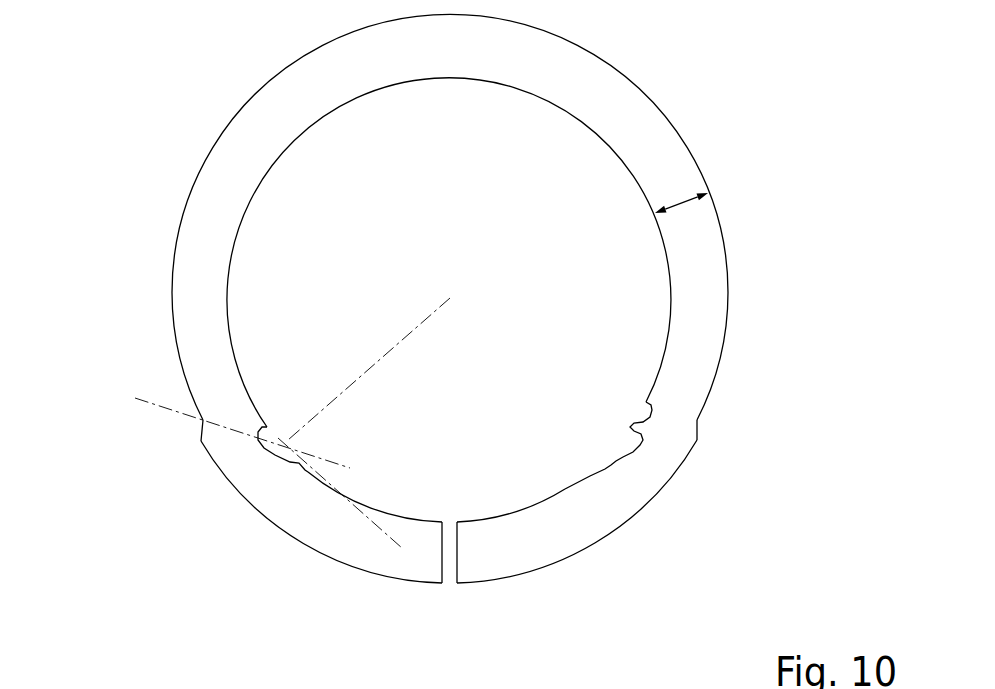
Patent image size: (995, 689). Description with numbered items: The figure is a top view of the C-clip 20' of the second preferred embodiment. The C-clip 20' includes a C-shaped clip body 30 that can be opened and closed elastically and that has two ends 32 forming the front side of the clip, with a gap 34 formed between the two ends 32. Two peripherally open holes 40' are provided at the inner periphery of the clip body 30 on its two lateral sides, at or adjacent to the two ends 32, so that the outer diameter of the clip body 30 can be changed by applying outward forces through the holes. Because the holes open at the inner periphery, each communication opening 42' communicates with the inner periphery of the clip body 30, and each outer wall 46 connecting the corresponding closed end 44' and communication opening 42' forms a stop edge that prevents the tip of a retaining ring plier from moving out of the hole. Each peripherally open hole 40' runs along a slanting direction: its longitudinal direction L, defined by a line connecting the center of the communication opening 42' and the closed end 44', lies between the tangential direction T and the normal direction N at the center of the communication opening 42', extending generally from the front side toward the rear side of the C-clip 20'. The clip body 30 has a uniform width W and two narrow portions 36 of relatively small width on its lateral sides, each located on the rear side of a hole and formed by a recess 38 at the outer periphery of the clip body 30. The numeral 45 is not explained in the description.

The C-clip 20' is at (465, 351).
The clip body 30 is at (167, 216).
The ends 32 is at (457, 552).
The gap 34 is at (448, 583).
The narrow portions 36 is at (678, 410).
The recess 38 is at (698, 427).
The peripherally open holes 40' is at (455, 385).
The communication opening 42' is at (454, 448).
The closed end 44' is at (424, 429).
The protrusion 45 is at (623, 463).
The outer wall 46 is at (648, 400).
The width W is at (681, 192).
The normal direction N is at (383, 350).
The longitudinal direction L is at (225, 427).
The tangential direction T is at (363, 515).